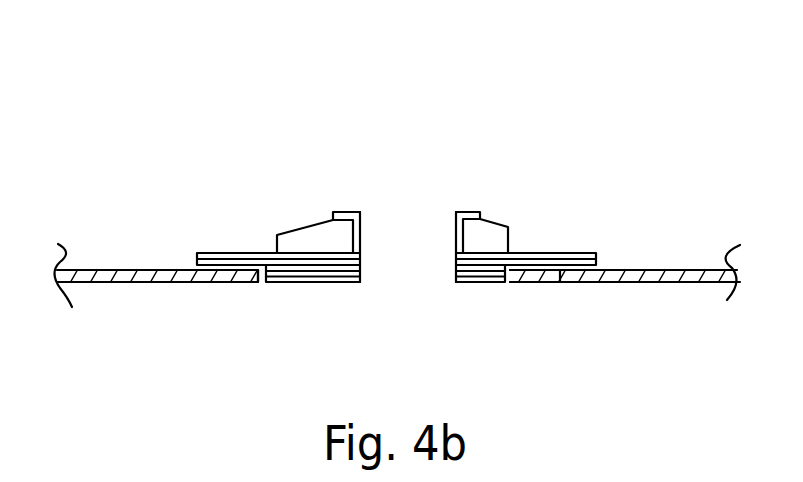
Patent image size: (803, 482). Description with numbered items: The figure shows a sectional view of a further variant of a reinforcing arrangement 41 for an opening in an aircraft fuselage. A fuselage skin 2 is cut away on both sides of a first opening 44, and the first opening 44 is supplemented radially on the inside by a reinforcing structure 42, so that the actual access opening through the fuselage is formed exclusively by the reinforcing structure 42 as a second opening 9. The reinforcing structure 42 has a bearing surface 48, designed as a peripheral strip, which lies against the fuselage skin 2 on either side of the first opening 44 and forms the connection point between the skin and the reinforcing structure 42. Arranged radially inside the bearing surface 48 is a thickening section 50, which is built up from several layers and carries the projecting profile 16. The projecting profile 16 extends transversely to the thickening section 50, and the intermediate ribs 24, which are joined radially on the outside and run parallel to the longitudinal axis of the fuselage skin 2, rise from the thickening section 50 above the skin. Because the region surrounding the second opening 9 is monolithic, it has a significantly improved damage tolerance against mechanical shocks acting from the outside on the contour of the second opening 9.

The fuselage skin 2 is at (95, 270).
The bearing surface 48 is at (217, 285).
The reinforcing structure 42 is at (278, 177).
The intermediate ribs 24 is at (300, 247).
The reinforcing arrangement 41 is at (580, 153).
The projecting profile 16 is at (521, 224).
The thickening section 50 is at (267, 285).
The second opening 9 is at (362, 285).
The first opening 44 is at (500, 343).